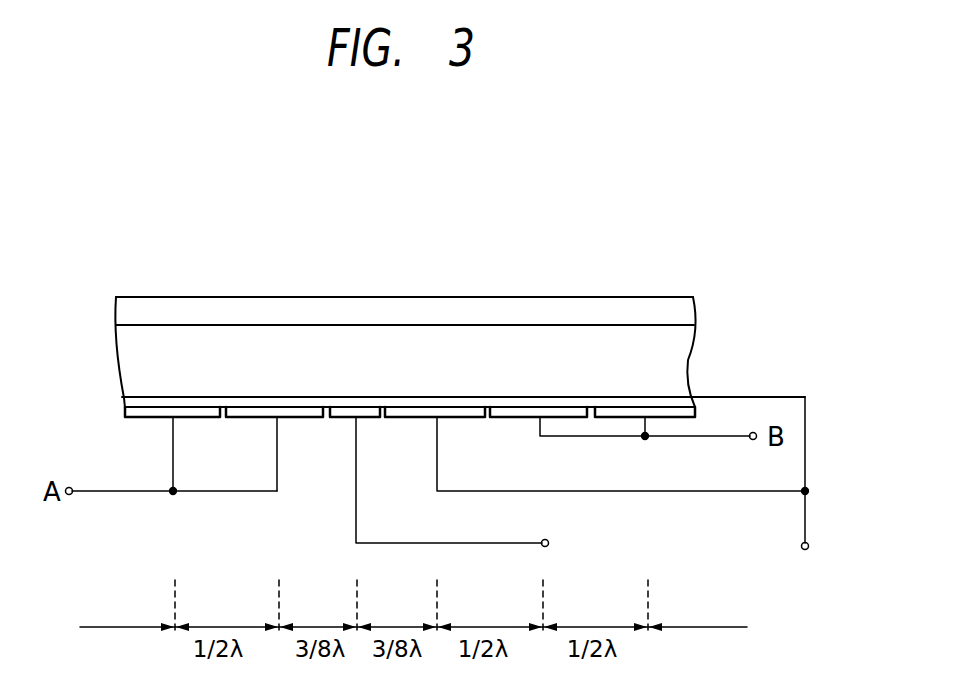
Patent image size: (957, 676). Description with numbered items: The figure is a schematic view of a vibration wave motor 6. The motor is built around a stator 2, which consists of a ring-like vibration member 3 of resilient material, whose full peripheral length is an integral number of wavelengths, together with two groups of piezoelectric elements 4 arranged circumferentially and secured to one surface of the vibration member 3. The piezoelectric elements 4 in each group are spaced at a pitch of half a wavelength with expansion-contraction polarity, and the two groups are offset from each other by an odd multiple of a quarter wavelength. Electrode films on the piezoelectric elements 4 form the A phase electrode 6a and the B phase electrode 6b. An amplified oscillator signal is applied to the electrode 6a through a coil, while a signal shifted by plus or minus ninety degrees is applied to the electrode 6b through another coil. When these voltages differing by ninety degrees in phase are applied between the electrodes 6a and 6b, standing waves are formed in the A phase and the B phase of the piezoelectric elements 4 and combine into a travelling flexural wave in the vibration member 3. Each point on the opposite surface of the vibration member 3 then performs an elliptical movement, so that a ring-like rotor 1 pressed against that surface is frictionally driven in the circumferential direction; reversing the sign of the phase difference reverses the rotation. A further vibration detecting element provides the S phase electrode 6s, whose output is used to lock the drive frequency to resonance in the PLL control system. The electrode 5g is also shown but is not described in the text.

The rotor 1 is at (686, 311).
The stator 2 is at (702, 341).
The vibration member 3 is at (683, 380).
The piezoelectric elements 4 is at (137, 400).
The vibration wave motor 6 is at (581, 281).
The electrode 6a is at (248, 417).
The S phase electrode 6s is at (343, 417).
The ground electrode 5g is at (453, 417).
The electrode 6b is at (568, 417).